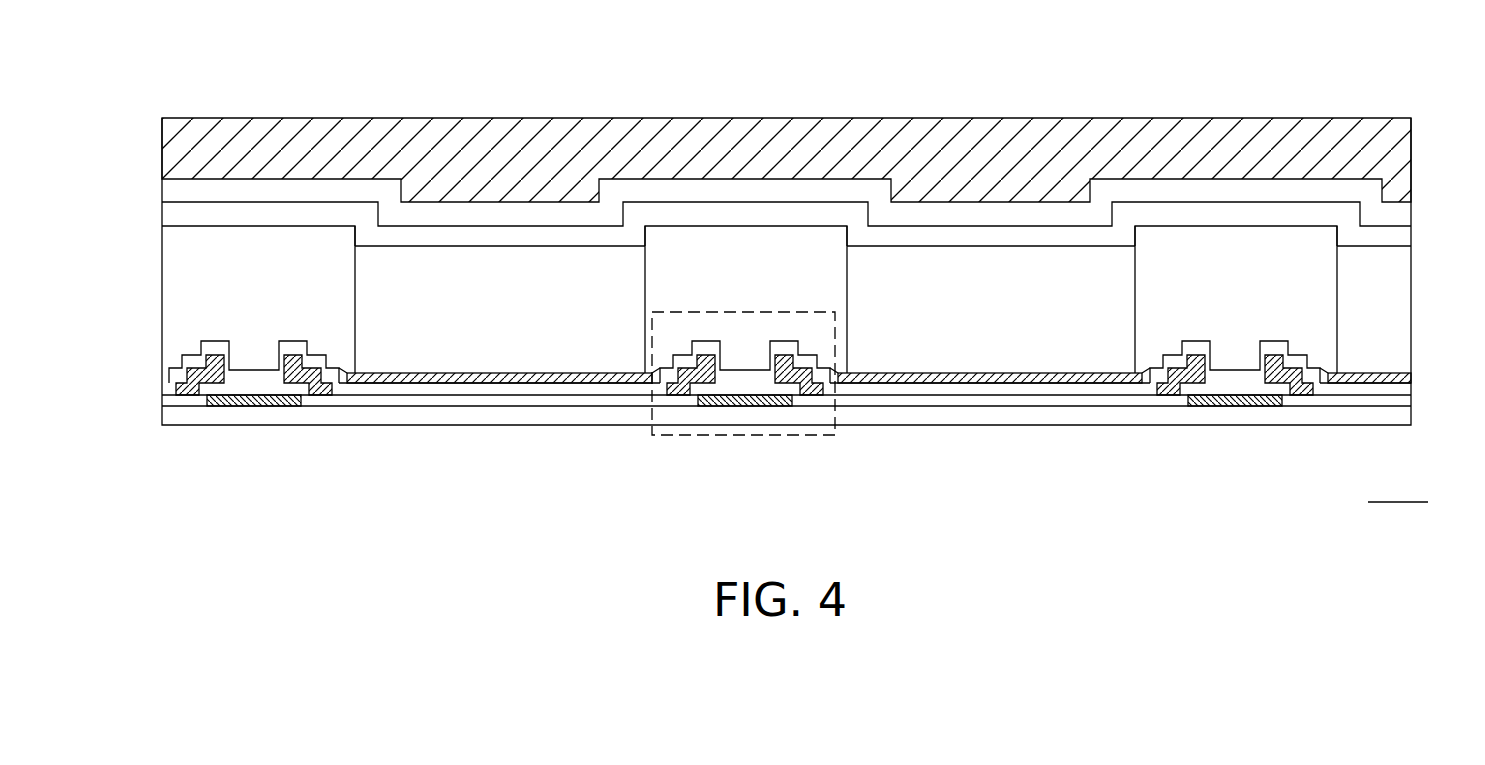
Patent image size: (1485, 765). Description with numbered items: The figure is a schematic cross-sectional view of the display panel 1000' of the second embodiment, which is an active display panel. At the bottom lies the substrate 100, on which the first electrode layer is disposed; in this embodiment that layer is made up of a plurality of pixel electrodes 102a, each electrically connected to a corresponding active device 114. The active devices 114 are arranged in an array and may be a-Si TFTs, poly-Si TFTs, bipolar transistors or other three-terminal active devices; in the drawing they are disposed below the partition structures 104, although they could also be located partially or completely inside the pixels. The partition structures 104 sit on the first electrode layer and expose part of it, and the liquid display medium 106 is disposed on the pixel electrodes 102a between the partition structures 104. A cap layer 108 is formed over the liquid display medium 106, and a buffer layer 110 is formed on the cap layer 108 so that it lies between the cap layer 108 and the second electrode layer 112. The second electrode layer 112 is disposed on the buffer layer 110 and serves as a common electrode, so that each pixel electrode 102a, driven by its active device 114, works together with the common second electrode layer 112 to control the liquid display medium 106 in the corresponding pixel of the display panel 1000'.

The substrate 100 is at (1266, 415).
The pixel electrode 102a is at (1079, 385).
The partition structure 104 is at (1270, 270).
The liquid display medium 106 is at (1015, 290).
The cap layer 108 is at (1313, 217).
The buffer layer 110 is at (1205, 195).
The second electrode layer 112 is at (1140, 150).
The active device 114 is at (683, 440).
The display panel 1000' is at (1398, 483).